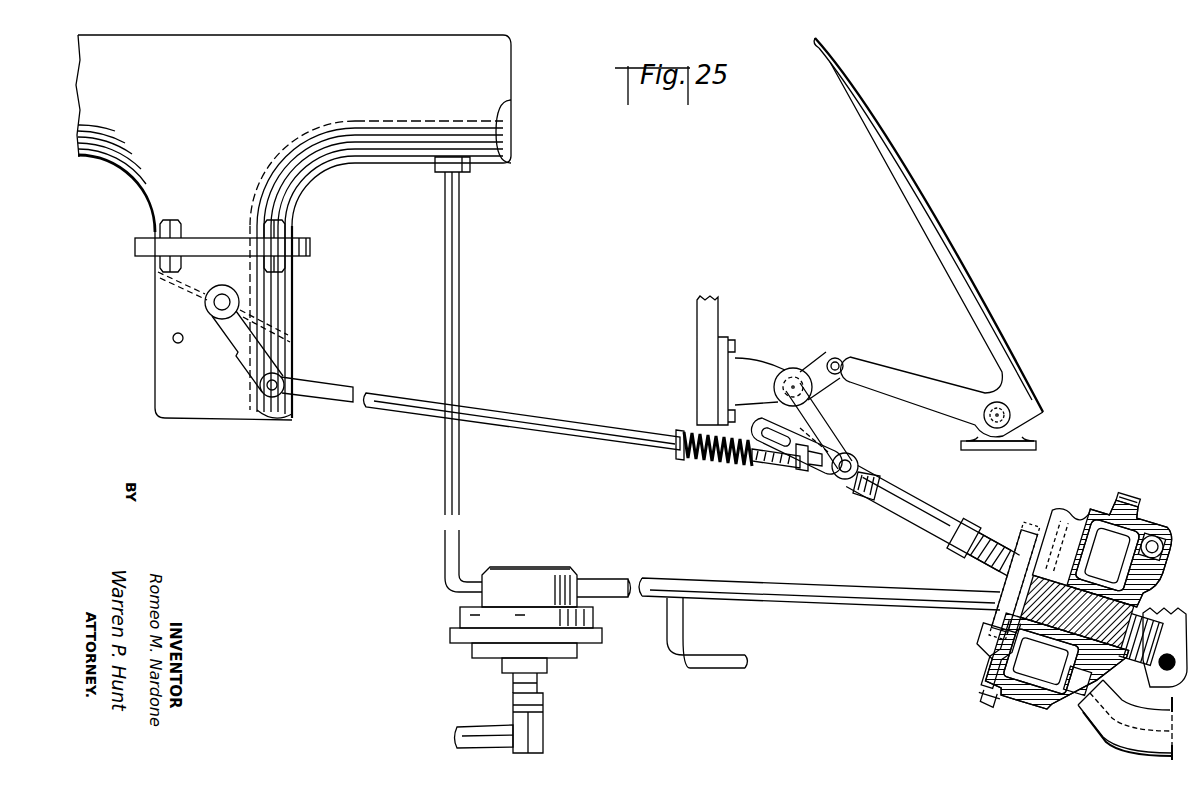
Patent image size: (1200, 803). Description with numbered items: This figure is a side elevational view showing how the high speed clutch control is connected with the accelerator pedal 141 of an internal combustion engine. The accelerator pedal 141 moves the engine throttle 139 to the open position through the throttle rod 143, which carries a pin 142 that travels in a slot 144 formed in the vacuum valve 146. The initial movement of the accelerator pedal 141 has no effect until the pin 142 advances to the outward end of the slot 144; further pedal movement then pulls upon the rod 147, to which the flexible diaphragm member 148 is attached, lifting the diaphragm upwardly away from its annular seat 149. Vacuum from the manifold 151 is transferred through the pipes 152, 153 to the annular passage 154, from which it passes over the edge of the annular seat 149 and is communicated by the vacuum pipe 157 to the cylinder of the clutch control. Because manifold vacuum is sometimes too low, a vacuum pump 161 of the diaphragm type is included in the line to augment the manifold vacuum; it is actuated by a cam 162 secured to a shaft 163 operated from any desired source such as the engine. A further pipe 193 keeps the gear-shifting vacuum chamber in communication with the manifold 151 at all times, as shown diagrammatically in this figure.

The manifold 151 is at (244, 112).
The engine throttle 139 is at (178, 288).
The pipe 152 is at (460, 332).
The throttle rod 143 is at (600, 438).
The slot 144 is at (761, 434).
The pin 142 is at (858, 462).
The rod 147 is at (918, 500).
The accelerator pedal 141 is at (893, 133).
The vacuum valve 146 is at (1084, 501).
The annular passage 154 is at (1138, 520).
The pipe 153 is at (700, 584).
The pipe 193 is at (712, 666).
The vacuum pump 161 is at (556, 563).
The cam 162 is at (540, 716).
The shaft 163 is at (486, 727).
The flexible diaphragm member 148 is at (1012, 672).
The annular seat 149 is at (1037, 706).
The vacuum pipe 157 is at (1100, 733).